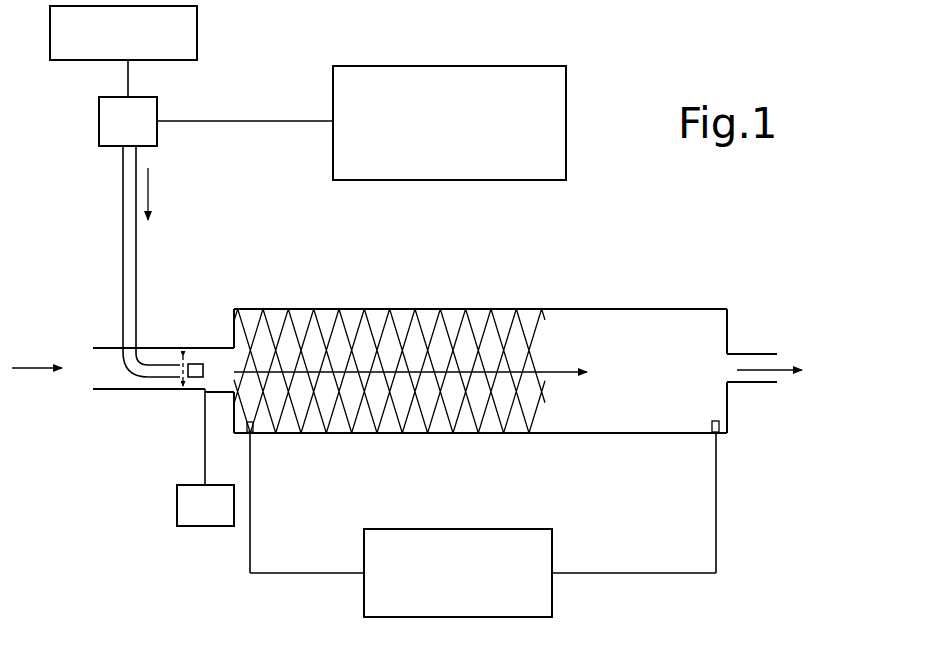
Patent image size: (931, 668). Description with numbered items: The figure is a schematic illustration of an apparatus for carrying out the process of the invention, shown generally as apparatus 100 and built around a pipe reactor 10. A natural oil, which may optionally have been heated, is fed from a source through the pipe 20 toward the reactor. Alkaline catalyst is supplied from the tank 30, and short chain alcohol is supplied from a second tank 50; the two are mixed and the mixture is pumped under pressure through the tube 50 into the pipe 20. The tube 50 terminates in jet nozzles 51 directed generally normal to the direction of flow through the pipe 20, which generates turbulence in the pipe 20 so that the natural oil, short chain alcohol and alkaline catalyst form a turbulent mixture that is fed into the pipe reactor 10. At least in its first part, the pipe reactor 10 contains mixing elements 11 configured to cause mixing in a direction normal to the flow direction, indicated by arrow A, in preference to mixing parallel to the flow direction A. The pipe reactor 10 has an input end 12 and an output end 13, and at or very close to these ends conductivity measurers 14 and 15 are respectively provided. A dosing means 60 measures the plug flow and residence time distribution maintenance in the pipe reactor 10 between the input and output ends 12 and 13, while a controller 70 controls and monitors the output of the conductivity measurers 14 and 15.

The pipe reactor 10 is at (630, 298).
The mixing elements 11 is at (362, 340).
The input end 12 is at (236, 323).
The output end 13 is at (728, 333).
The conductivity measurer 14 is at (253, 435).
The conductivity measurer 15 is at (720, 433).
The pipe 20 is at (100, 364).
The tank 30 is at (175, 42).
The tube 50 is at (448, 66).
The jet nozzles 51 is at (190, 358).
The dosing means 60 is at (195, 500).
The controller 70 is at (471, 537).
The exhaust gas purification system 100 is at (778, 662).
The arrow A is at (550, 373).